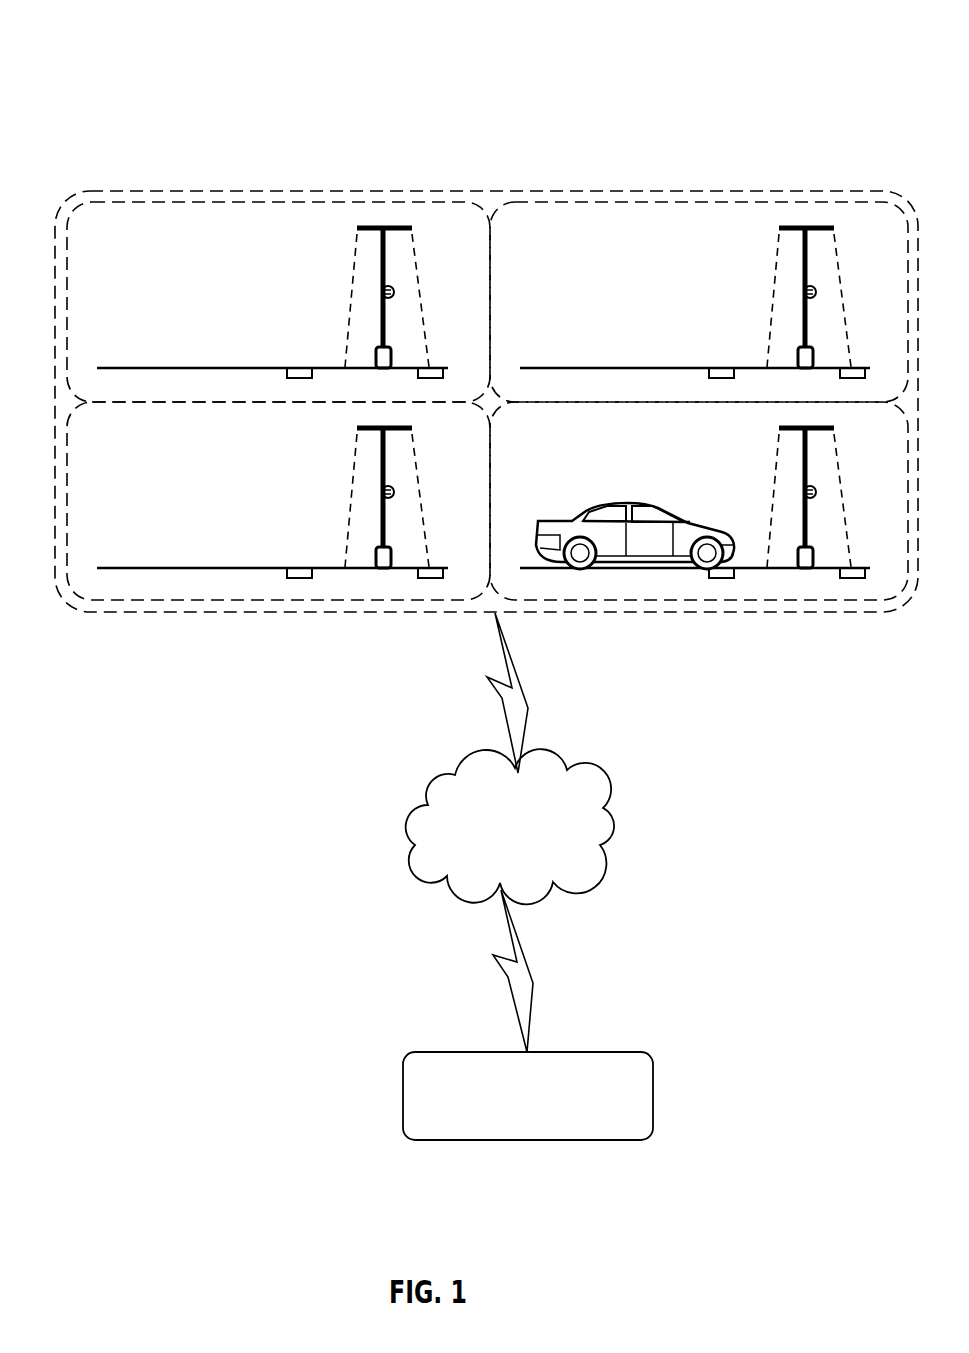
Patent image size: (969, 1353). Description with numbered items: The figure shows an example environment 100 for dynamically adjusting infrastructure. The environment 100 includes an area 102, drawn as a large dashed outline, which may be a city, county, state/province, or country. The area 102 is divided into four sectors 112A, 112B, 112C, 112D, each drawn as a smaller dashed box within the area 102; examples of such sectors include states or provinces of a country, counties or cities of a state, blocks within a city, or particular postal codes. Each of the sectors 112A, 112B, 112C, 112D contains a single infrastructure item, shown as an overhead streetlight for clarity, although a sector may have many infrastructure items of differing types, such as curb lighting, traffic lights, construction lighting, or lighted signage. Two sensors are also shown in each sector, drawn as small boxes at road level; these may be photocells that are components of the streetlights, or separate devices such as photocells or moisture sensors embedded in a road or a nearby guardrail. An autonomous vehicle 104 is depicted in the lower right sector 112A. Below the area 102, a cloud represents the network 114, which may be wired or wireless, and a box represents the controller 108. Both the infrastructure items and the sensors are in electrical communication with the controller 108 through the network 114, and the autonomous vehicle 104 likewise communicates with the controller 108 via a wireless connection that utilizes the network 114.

The environment 100 is at (778, 40).
The area 102 is at (822, 192).
The autonomous vehicle 104 is at (608, 503).
The controller 108 is at (446, 1140).
The sector 112A is at (558, 601).
The sector 112B is at (228, 601).
The sector 112C is at (258, 202).
The sector 112D is at (660, 203).
The network 114 is at (567, 765).